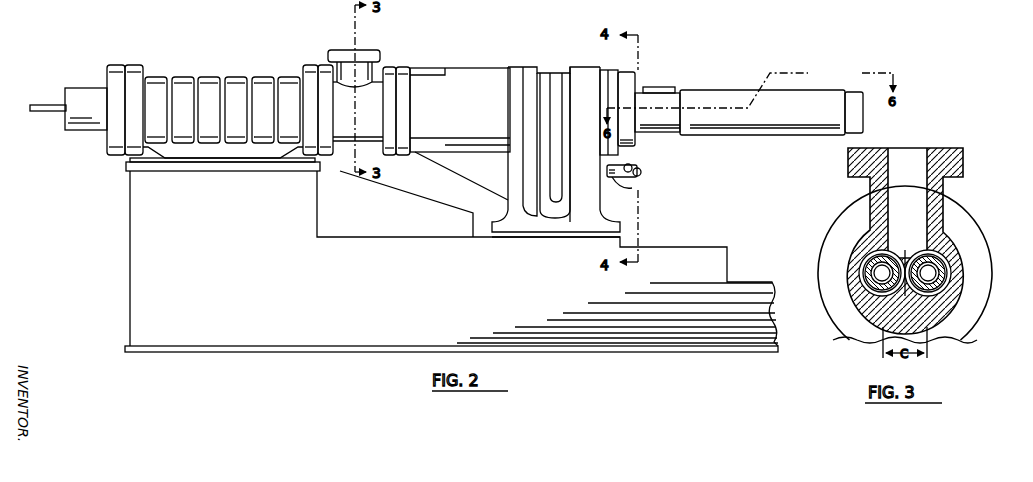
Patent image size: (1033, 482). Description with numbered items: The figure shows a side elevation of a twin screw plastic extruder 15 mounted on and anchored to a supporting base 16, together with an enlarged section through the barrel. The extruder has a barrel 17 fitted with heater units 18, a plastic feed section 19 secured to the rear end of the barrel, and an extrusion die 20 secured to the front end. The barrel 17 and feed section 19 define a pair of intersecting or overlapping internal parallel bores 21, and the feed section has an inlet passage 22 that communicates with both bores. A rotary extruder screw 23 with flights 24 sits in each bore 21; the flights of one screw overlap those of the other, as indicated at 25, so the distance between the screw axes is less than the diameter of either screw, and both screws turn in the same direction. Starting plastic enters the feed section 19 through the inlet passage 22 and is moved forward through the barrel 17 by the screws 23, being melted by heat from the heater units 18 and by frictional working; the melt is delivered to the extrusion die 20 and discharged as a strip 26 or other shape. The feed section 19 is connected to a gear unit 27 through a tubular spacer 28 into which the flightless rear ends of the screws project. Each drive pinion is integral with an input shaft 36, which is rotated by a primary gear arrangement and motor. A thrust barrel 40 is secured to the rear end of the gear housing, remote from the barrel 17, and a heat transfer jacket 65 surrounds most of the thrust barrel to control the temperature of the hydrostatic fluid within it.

In FIG. 2, the twin screw plastic extruder 15 is at (220, 98).
In FIG. 2, the supporting base 16 is at (279, 299).
In FIG. 2, the barrel 17 is at (168, 78).
In FIG. 2, the heater units 18 is at (288, 90).
In FIG. 2, the plastic feed section 19 is at (368, 57).
In FIG. 3, the plastic feed section 19 is at (947, 150).
In FIG. 2, the extrusion die 20 is at (82, 97).
In FIG. 3, the internal parallel bores 21 is at (878, 300).
In FIG. 3, the inlet passage 22 is at (893, 165).
In FIG. 3, the rotary extruder screw 23 is at (873, 278).
In FIG. 3, the flights 24 is at (865, 258).
In FIG. 3, the intersection of screw flights 25 is at (905, 258).
In FIG. 2, the strip 26 is at (40, 106).
In FIG. 2, the gear unit 27 is at (530, 70).
In FIG. 2, the tubular spacer 28 is at (457, 75).
In FIG. 2, the input shaft 36 is at (636, 182).
In FIG. 2, the thrust barrel 40 is at (668, 118).
In FIG. 2, the heat transfer jacket 65 is at (702, 98).